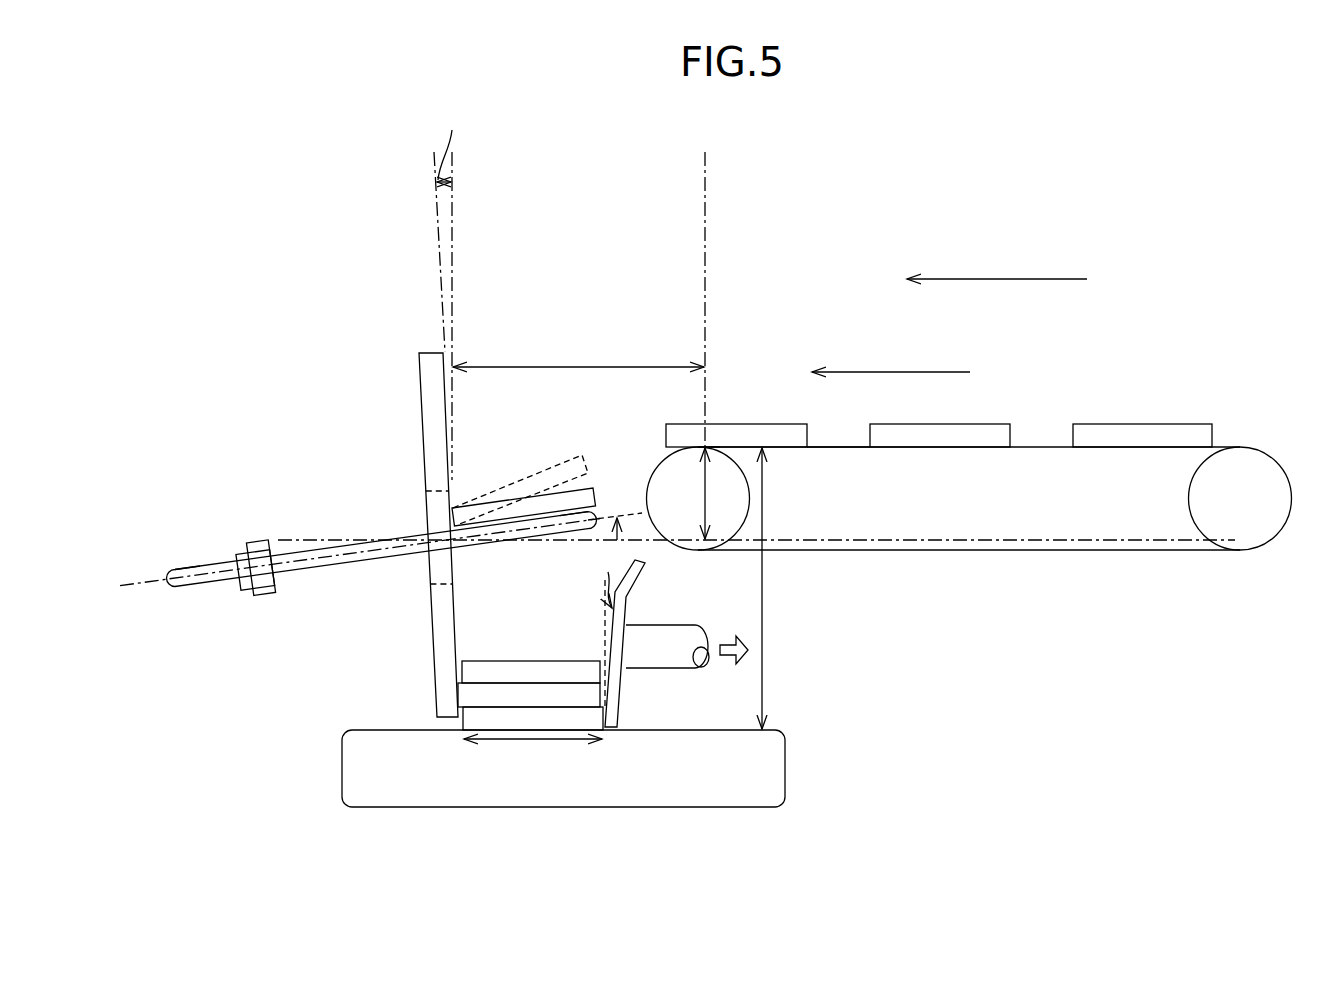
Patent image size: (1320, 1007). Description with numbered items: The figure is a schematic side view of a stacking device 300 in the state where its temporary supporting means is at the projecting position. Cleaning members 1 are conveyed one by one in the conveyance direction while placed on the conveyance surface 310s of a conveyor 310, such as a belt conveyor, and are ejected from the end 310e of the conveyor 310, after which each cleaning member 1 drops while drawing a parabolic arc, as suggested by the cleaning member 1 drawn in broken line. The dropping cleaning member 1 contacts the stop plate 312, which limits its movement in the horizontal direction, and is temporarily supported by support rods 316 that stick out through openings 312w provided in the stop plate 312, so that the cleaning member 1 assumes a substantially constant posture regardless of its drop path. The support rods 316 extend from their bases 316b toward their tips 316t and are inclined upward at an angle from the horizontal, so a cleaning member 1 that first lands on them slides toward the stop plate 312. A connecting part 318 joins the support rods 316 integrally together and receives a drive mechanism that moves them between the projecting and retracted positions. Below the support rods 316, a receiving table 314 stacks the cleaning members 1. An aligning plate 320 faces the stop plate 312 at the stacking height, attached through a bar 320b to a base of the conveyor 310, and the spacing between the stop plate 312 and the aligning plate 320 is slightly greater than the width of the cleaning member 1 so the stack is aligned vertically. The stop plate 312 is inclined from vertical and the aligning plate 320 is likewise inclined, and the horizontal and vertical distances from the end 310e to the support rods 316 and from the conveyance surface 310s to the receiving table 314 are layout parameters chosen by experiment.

The cleaning member 1 is at (1093, 432).
The stacking device 300 is at (1192, 257).
The conveyor 310 is at (1045, 572).
The end of the conveyor 310e is at (703, 447).
The conveyance surface 310s is at (837, 447).
The stop plate 312 is at (422, 393).
The opening 312w is at (428, 517).
The receiving table 314 is at (628, 790).
The support rod 316 is at (331, 548).
The base of support rod 316b is at (185, 567).
The tip of support rod 316t is at (576, 532).
The connecting part 318 is at (256, 542).
The aligning plate 320 is at (623, 605).
The bar 320b is at (657, 657).